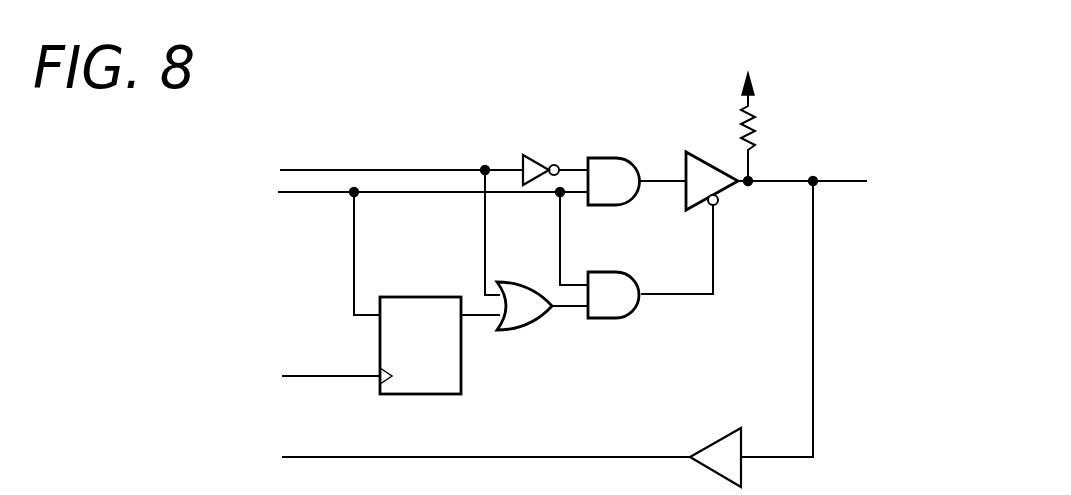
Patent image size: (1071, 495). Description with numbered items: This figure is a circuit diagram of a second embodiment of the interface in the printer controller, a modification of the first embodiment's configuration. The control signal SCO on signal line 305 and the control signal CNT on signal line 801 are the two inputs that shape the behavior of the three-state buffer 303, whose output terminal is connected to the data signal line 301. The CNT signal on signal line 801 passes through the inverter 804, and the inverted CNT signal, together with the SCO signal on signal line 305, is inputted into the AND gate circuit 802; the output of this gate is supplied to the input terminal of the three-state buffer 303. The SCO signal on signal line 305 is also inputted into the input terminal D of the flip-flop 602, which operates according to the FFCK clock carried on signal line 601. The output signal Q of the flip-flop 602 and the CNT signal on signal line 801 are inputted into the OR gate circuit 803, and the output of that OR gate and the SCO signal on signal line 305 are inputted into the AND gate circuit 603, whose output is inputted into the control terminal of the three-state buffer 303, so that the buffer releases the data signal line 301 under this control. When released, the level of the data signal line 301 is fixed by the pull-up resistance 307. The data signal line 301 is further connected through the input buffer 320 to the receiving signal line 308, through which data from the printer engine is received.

The signal line 801 is at (312, 169).
The signal line 305 is at (312, 194).
The inverter 804 is at (535, 155).
The AND gate circuit 802 is at (610, 206).
The three-state buffer 303 is at (684, 156).
The pull-up resistance 307 is at (741, 118).
The data signal line 301 is at (770, 178).
The flip-flop 602 is at (425, 296).
The signal line 601 is at (318, 374).
The OR gate circuit 803 is at (522, 330).
The AND gate circuit 603 is at (612, 320).
The receiving signal line 308 is at (523, 456).
The input buffer 320 is at (712, 443).